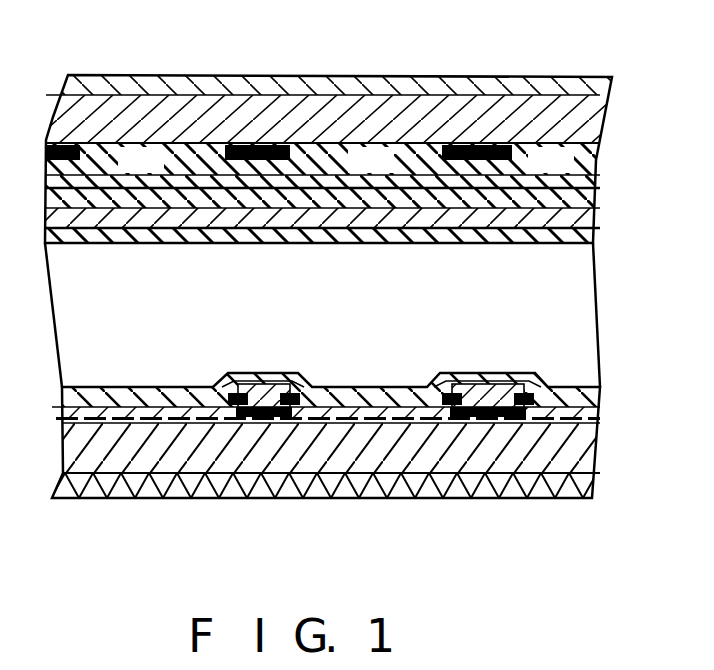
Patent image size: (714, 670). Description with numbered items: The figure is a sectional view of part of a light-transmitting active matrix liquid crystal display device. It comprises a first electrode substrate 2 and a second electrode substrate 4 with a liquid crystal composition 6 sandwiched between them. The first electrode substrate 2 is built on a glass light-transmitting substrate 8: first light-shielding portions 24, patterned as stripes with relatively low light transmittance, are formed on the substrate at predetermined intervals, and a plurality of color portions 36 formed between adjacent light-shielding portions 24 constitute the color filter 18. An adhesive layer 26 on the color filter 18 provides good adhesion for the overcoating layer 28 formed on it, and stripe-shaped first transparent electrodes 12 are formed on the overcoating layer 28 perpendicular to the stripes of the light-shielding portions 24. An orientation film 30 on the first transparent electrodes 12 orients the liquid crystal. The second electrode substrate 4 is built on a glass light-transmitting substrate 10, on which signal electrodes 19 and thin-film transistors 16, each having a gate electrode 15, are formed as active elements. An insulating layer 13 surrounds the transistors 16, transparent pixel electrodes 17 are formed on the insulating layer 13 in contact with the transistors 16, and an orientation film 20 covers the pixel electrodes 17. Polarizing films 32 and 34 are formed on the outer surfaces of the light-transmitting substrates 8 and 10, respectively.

The first electrode substrate 2 is at (590, 68).
The second electrode substrate 4 is at (590, 503).
The liquid crystal composition 6 is at (587, 318).
The light-transmitting substrate 8 is at (234, 107).
The light-transmitting substrate 10 is at (255, 470).
The first transparent electrodes 12 is at (588, 223).
The insulating layer 13 is at (593, 457).
The gate electrode 15 is at (478, 427).
The thin-film transistor 16 is at (490, 383).
The transparent pixel electrodes 17 is at (603, 420).
The color filter 18 is at (353, 91).
The signal electrodes 19 is at (228, 405).
The orientation film 20 is at (593, 388).
The first light-shielding portions 24 is at (283, 145).
The adhesive layer 26 is at (583, 183).
The overcoating layer 28 is at (590, 197).
The orientation film 30 is at (596, 243).
The polarizing film 32 is at (122, 83).
The polarizing film 34 is at (127, 500).
The color portions 36 is at (181, 150).